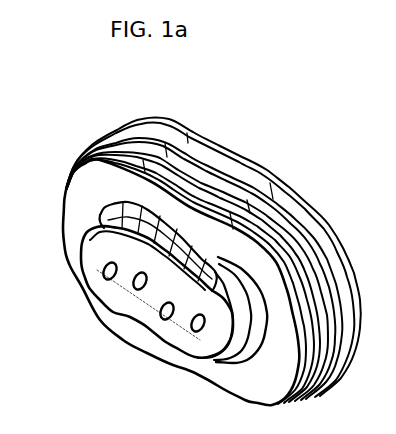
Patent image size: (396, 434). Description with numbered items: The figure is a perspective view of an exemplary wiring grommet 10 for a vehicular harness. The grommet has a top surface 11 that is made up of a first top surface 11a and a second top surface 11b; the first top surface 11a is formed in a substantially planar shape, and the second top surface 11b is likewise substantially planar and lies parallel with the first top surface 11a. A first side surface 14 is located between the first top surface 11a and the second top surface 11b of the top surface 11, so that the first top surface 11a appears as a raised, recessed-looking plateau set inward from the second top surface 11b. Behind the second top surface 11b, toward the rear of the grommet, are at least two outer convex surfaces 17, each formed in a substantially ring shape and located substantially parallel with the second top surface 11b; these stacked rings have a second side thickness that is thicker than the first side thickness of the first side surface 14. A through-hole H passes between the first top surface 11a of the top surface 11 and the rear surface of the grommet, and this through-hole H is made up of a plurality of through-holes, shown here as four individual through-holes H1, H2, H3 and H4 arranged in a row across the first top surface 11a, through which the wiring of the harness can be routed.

The wiring grommet 10 is at (292, 118).
The top surface 11 is at (31, 242).
The first top surface 11a is at (88, 299).
The second top surface 11b is at (74, 241).
The first side surface 14 is at (88, 221).
The outer convex surface 17 is at (339, 242).
The through-hole H is at (114, 306).
The through-hole H1 is at (110, 262).
The through-hole H2 is at (140, 272).
The through-hole H3 is at (167, 302).
The through-hole H4 is at (198, 314).